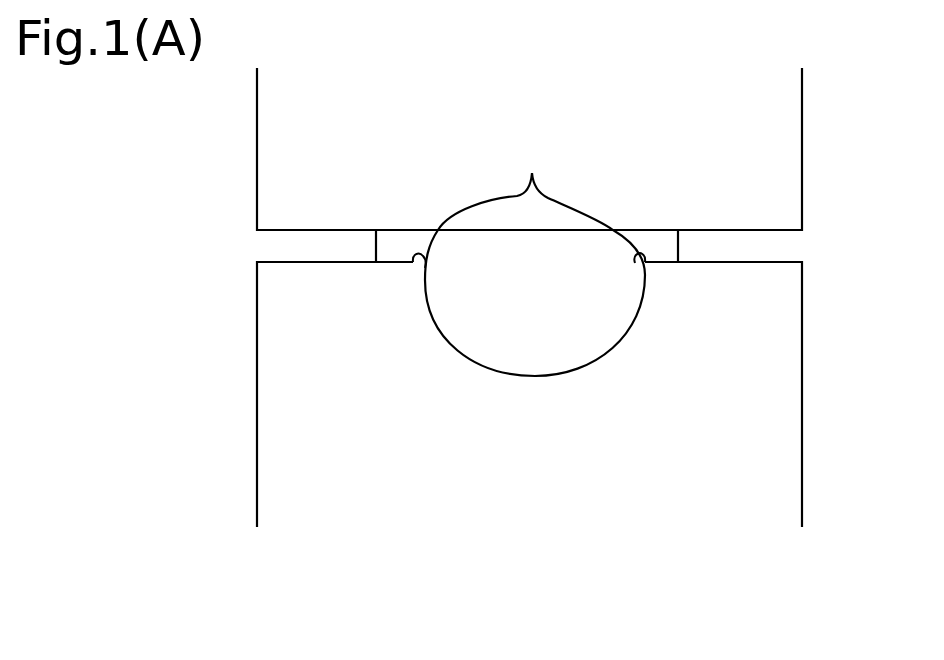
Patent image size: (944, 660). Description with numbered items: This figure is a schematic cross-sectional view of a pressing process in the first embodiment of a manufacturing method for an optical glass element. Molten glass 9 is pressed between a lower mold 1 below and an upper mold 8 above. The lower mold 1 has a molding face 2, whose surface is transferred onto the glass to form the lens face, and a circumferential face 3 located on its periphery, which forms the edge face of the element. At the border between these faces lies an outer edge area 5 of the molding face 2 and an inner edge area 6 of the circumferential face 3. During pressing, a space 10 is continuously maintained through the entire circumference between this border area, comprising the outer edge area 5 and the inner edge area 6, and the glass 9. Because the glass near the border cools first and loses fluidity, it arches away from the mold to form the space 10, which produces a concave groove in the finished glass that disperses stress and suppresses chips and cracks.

The lower mold 1 is at (778, 445).
The molding face 2 is at (535, 342).
The circumferential face 3 is at (328, 266).
The outer edge area 5 is at (417, 273).
The inner edge area 6 is at (417, 268).
The upper mold 8 is at (777, 142).
The molten glass 9 is at (506, 342).
The space 10 is at (525, 182).